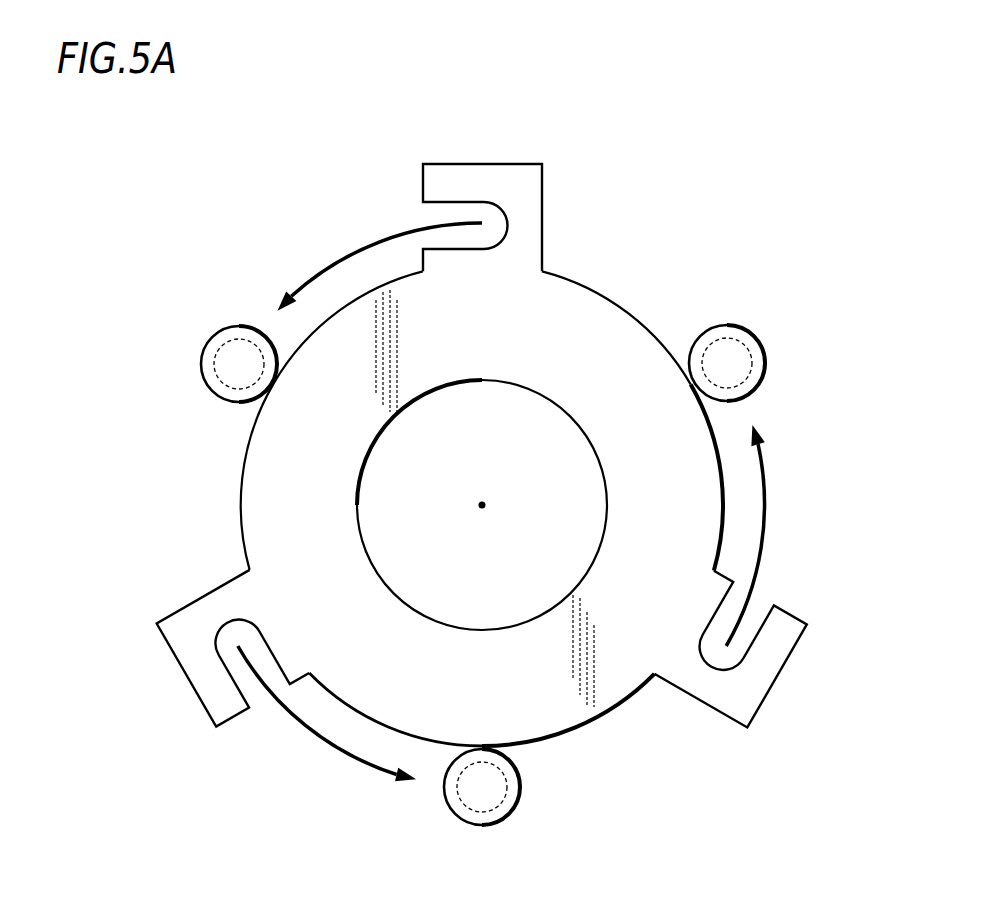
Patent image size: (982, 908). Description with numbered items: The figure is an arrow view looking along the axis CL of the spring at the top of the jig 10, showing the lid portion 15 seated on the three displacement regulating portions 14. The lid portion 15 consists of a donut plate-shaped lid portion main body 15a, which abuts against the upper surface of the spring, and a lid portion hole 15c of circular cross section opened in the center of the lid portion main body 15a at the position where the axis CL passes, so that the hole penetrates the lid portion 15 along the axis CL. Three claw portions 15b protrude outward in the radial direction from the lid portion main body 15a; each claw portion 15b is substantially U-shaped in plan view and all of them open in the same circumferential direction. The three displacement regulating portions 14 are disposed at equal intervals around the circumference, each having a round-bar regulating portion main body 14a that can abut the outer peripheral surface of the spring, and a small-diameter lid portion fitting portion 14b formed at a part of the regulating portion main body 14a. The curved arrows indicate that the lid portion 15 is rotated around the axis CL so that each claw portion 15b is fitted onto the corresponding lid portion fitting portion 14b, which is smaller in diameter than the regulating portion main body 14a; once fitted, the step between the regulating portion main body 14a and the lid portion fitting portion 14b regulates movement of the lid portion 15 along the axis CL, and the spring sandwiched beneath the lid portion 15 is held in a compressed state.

The jig 10 is at (253, 176).
The displacement regulating portion 14 is at (481, 559).
The regulating portion main body 14a is at (233, 327).
The lid portion fitting portion 14b is at (208, 367).
The lid portion 15 is at (500, 468).
The lid portion main body 15a is at (548, 707).
The claw portion 15b is at (478, 178).
The lid portion hole 15c is at (472, 628).
The axis CL is at (488, 504).